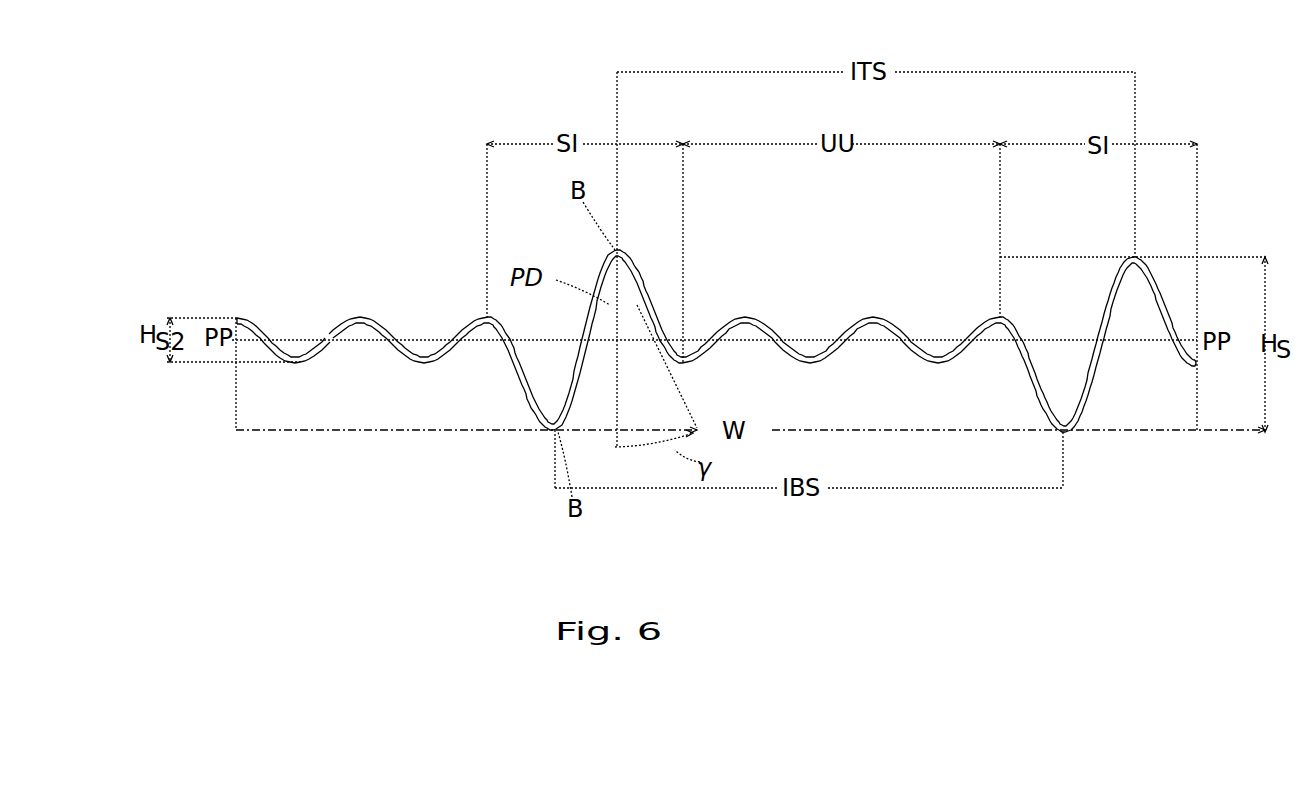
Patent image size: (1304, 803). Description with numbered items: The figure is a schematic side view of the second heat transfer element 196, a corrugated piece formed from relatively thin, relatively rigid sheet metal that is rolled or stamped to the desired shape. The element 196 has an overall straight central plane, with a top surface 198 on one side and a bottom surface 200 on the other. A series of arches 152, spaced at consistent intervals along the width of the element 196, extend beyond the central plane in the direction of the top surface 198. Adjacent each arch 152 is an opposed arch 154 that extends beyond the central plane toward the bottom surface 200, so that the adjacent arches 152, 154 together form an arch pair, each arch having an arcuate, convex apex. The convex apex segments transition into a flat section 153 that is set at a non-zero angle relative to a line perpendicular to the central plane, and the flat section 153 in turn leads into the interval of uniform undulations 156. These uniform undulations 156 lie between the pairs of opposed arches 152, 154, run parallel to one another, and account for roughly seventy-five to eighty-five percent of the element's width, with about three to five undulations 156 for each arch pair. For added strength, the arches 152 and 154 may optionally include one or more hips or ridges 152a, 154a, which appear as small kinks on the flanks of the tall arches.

The arch 152 is at (620, 248).
The hip or ridge 152a is at (1100, 282).
The flat section 153 is at (517, 370).
The opposed arch 154 is at (554, 430).
The hip or ridge 154a is at (1037, 393).
The uniform undulation 156 is at (425, 364).
The second heat transfer element 196 is at (238, 318).
The top surface 198 is at (360, 318).
The bottom surface 200 is at (295, 364).